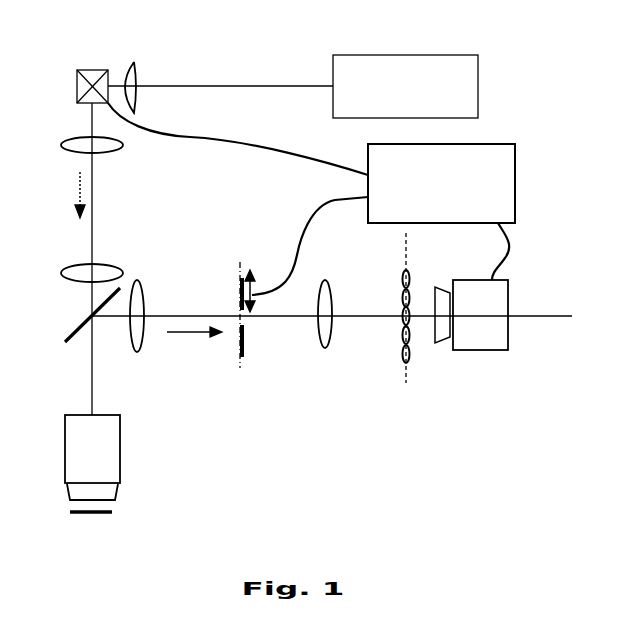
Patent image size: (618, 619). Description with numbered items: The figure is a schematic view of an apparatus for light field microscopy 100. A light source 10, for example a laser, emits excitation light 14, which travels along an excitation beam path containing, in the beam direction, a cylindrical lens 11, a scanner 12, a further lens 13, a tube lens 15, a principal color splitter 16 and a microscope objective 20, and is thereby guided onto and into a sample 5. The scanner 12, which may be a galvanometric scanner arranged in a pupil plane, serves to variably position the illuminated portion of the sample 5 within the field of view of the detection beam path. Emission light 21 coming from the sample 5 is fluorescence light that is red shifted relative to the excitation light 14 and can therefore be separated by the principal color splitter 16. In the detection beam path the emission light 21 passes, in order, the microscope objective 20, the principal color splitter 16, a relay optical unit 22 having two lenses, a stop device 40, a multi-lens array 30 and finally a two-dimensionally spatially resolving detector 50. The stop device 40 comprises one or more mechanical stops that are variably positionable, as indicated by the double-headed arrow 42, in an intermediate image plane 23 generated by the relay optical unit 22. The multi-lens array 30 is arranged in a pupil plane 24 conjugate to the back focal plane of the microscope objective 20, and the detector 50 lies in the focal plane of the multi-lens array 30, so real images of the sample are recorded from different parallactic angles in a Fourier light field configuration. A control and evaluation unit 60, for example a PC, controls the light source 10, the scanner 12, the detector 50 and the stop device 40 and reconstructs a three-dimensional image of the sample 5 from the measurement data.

The sample 5 is at (103, 512).
The light source 10 is at (391, 98).
The cylindrical lens 11 is at (133, 74).
The scanner 12 is at (75, 76).
The further lens 13 is at (76, 145).
The excitation light 14 is at (68, 195).
The tube lens 15 is at (77, 272).
The principal color splitter 16 is at (79, 328).
The microscope objective 20 is at (81, 460).
The emission light 21 is at (194, 345).
The relay optical unit 22 is at (138, 273).
The intermediate image plane 23 is at (242, 329).
The pupil plane 24 is at (412, 320).
The multi-lens array 30 is at (388, 356).
The stop device 40 is at (256, 355).
The double-headed arrow 42 is at (306, 254).
The two-dimensionally spatially resolving detector 50 is at (474, 328).
The control and evaluation unit 60 is at (432, 197).
The apparatus for light field microscopy 100 is at (490, 441).